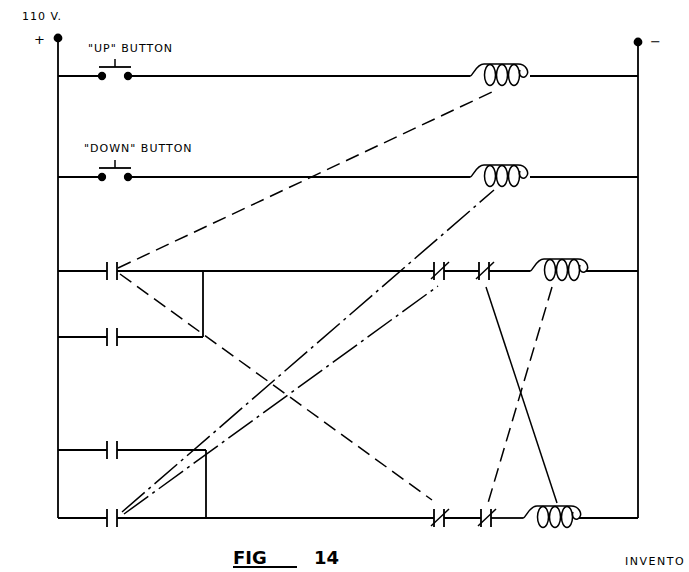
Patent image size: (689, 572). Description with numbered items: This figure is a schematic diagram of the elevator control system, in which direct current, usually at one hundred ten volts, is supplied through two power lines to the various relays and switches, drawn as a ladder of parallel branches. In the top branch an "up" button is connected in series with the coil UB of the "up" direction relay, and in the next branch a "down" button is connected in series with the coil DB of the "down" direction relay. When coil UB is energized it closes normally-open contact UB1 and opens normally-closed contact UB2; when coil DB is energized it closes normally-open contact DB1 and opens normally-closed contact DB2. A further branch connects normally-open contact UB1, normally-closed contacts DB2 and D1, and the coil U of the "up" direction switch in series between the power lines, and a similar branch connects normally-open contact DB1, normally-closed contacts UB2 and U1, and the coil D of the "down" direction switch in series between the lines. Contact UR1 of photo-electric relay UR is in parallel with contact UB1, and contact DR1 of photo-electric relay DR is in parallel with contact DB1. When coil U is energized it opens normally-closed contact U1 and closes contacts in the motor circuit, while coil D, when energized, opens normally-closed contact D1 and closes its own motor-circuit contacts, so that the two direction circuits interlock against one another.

The coil of "up" direction relay UB is at (499, 69).
The coil of "down" direction relay DB is at (499, 170).
The coil of "up" direction switch U is at (559, 264).
The coil of "down" direction switch D is at (552, 526).
The normally-open contact UB1 is at (111, 263).
The contact of photo-electric relay UR UR1 is at (113, 329).
The contact of photo-electric relay DR DR1 is at (113, 442).
The normally-open contact DB1 is at (113, 510).
The normally-closed contact DB2 is at (444, 282).
The normally-closed contact D1 is at (485, 263).
The normally-closed contact UB2 is at (443, 508).
The normally-closed contact U1 is at (491, 508).